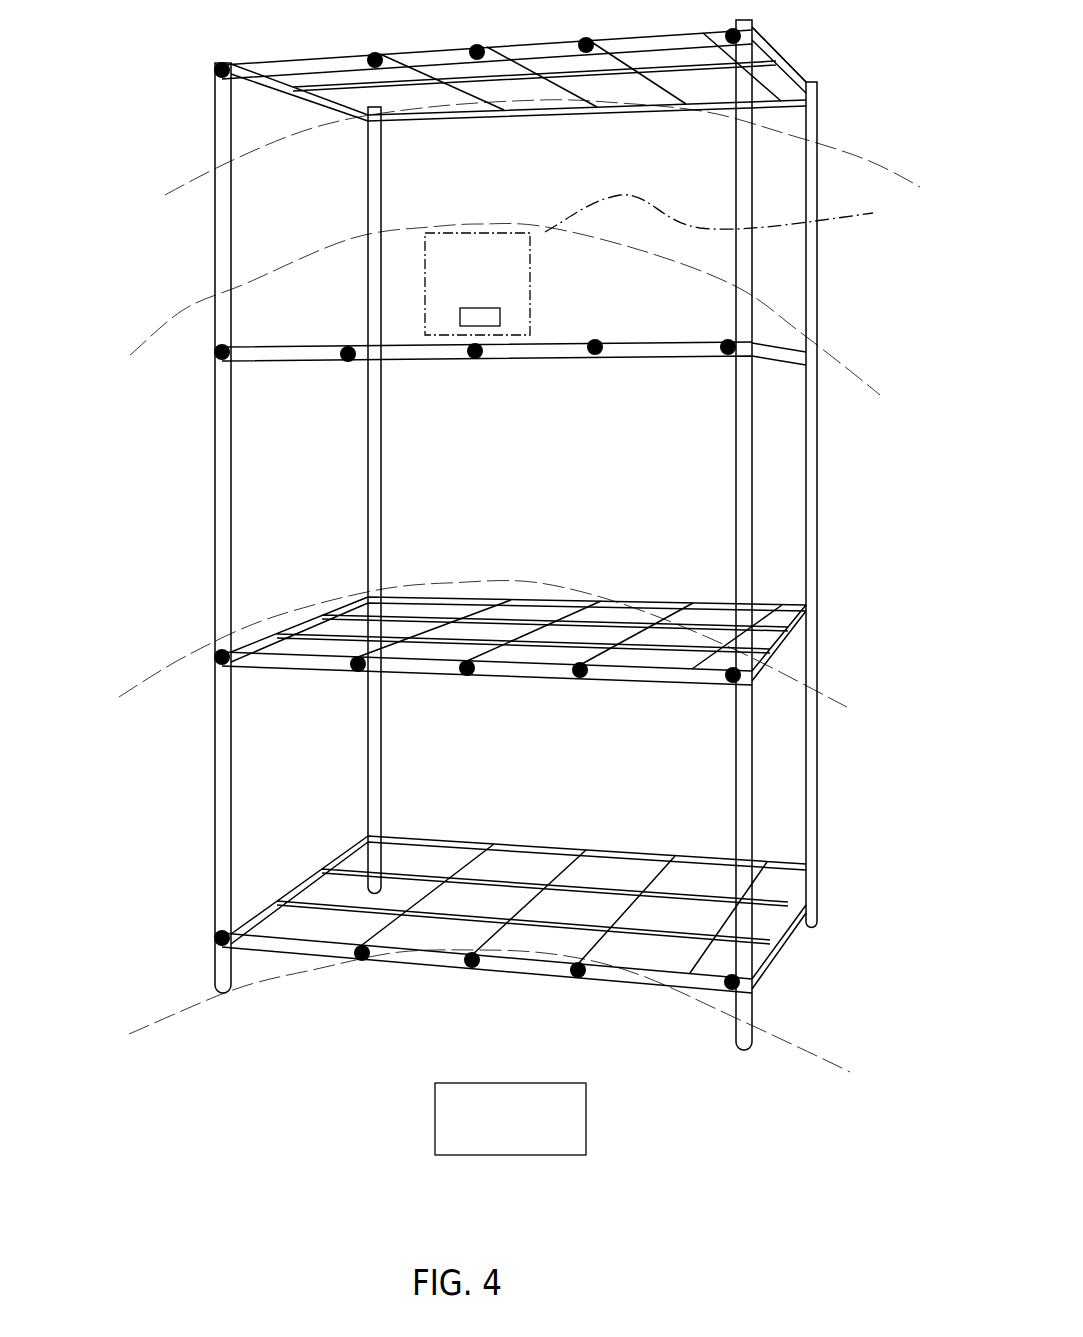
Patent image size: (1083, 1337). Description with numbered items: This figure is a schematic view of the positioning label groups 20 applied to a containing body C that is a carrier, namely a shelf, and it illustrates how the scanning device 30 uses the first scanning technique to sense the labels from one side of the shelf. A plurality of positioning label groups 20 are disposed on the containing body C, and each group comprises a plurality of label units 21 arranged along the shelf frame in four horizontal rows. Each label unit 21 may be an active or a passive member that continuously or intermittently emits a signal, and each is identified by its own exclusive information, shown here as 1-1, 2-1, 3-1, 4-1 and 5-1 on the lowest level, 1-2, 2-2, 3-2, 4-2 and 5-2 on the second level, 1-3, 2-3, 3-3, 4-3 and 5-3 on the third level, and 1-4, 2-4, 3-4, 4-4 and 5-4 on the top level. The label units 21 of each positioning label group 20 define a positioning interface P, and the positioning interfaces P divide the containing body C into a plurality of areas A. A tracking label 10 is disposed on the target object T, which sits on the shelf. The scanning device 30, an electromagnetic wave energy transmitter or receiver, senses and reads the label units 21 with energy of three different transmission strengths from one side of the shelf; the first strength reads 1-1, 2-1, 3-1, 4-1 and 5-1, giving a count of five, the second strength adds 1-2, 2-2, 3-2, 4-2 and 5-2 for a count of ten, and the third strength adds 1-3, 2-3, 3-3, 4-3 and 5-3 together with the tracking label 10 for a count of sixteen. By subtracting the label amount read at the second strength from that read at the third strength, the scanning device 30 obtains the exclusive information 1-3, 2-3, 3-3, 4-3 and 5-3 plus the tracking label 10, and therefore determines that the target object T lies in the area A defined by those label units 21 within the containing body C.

The exclusive information of label unit 1-1 is at (244, 955).
The exclusive information of label unit 2-1 is at (360, 974).
The exclusive information of label unit 3-1 is at (468, 982).
The exclusive information of label unit 4-1 is at (573, 990).
The exclusive information of label unit 5-1 is at (713, 998).
The exclusive information of label unit 1-2 is at (220, 679).
The exclusive information of label unit 2-2 is at (344, 682).
The exclusive information of label unit 3-2 is at (468, 688).
The exclusive information of label unit 4-2 is at (576, 693).
The exclusive information of label unit 5-2 is at (716, 696).
The exclusive information of label unit 1-3 is at (220, 376).
The exclusive information of label unit 2-3 is at (341, 377).
The exclusive information of label unit 3-3 is at (473, 376).
The exclusive information of label unit 4-3 is at (593, 375).
The exclusive information of label unit 5-3 is at (714, 375).
The exclusive information of label unit 1-4 is at (220, 95).
The exclusive information of label unit 2-4 is at (351, 93).
The exclusive information of label unit 3-4 is at (471, 83).
The exclusive information of label unit 4-4 is at (591, 75).
The exclusive information of label unit 5-4 is at (714, 70).
The tracking label 10 is at (500, 310).
The positioning label group 20 is at (117, 845).
The label unit 21 is at (221, 657).
The scanning device 30 is at (586, 1101).
The positioning interface P is at (222, 221).
The area A is at (280, 514).
The containing body C is at (787, 64).
The target object T is at (718, 213).